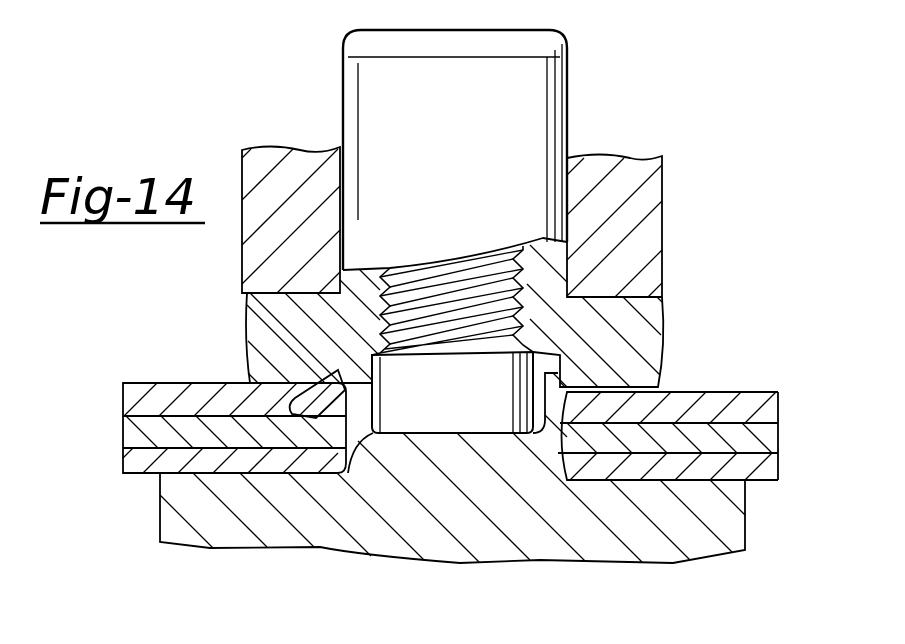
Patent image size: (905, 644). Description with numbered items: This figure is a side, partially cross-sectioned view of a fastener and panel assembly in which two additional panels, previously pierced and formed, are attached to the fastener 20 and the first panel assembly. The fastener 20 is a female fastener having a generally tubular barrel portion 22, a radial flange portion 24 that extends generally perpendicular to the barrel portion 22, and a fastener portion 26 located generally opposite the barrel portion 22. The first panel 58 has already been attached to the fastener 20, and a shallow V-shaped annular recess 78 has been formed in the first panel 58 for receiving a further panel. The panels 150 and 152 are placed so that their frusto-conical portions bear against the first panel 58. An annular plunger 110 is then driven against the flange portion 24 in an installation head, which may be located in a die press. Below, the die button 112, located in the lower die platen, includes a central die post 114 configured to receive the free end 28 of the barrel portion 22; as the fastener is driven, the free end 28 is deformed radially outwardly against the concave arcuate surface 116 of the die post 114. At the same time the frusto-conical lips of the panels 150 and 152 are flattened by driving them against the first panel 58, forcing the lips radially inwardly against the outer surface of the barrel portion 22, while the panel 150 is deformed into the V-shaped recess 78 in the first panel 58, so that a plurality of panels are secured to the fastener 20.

The fastener 20 is at (508, 127).
The barrel portion 22 is at (558, 395).
The radial flange portion 24 is at (637, 335).
The fastener portion 26 is at (456, 98).
The free end of the barrel portion 28 is at (357, 480).
The first panel 58 is at (685, 407).
The V-shaped annular recess 78 is at (300, 408).
The annular plunger 110 is at (632, 172).
The die button 112 is at (590, 540).
The central die post 114 is at (460, 460).
The concave arcuate surface 116 is at (553, 463).
The panel 150 is at (125, 462).
The panel 152 is at (133, 425).